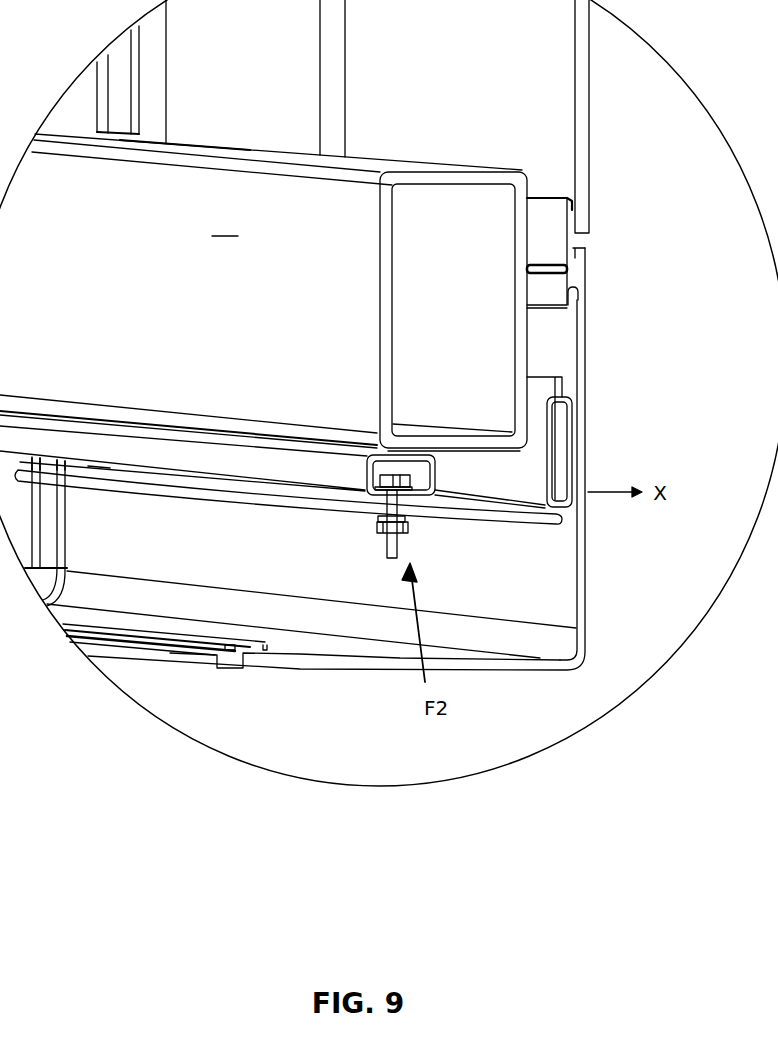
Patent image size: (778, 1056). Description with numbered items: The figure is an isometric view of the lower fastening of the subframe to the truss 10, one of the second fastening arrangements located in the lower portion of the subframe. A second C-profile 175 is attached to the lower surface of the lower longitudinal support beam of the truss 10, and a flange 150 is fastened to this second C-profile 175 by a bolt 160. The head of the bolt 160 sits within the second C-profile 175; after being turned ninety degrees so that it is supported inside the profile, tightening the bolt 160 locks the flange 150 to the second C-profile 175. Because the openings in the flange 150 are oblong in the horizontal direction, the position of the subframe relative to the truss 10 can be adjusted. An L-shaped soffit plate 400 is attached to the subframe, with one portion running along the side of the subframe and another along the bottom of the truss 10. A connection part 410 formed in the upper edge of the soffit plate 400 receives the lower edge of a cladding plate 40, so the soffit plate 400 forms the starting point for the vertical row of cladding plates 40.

The truss 10 is at (288, 334).
The cladding plate 40 is at (576, 90).
The flange 150 is at (299, 494).
The bolt 160 is at (410, 518).
The second C-profile 175 is at (238, 440).
The soffit plate 400 is at (576, 537).
The connection part 410 is at (586, 250).